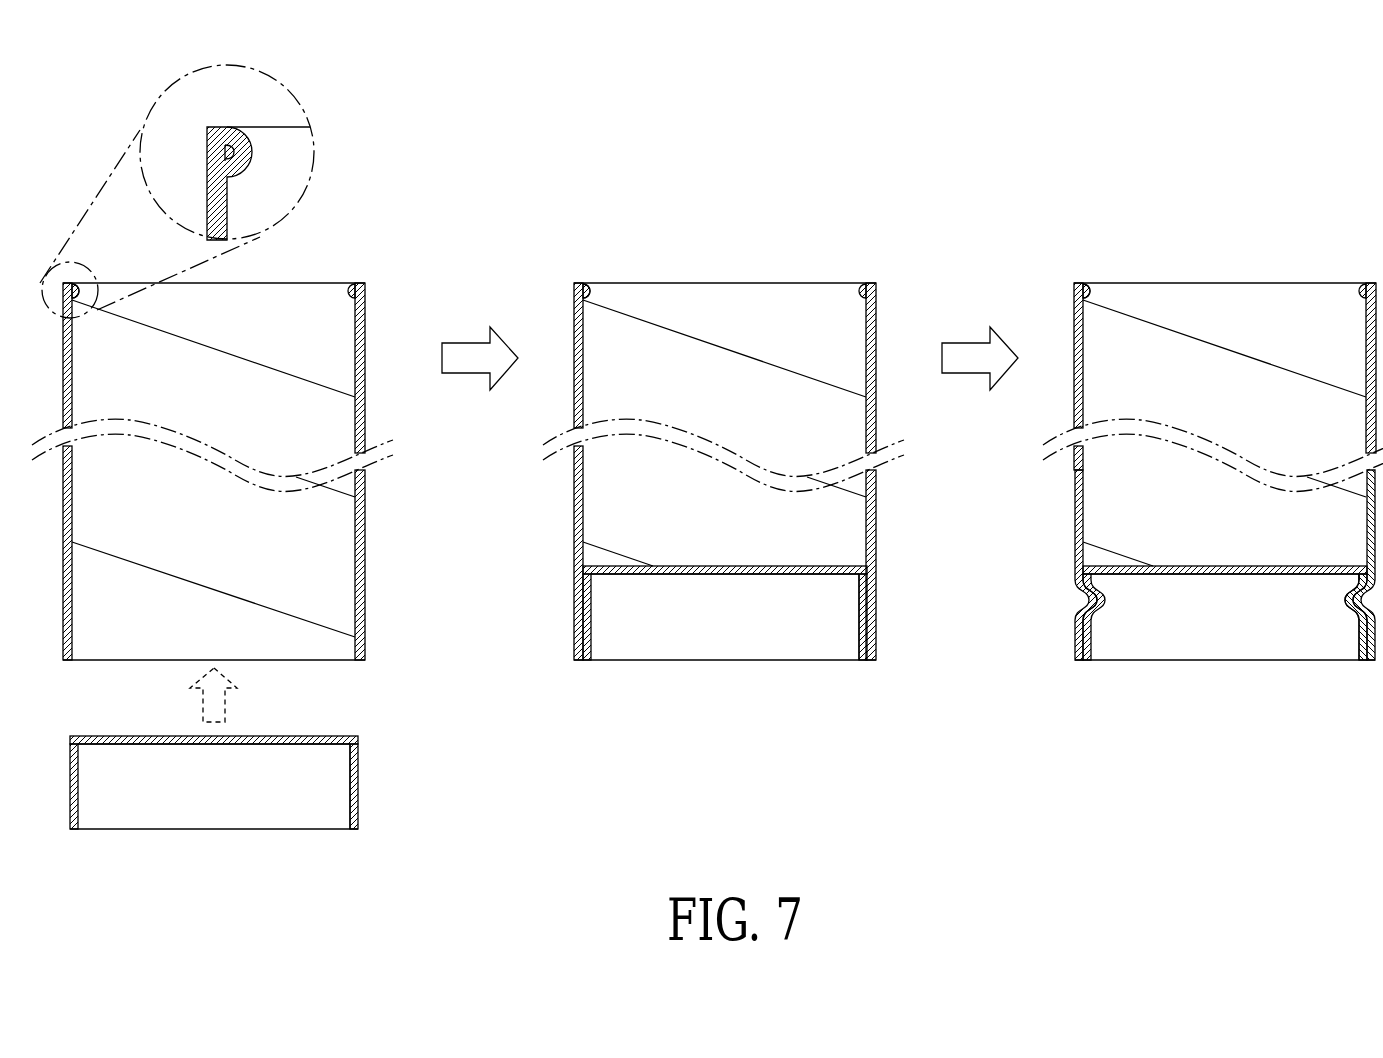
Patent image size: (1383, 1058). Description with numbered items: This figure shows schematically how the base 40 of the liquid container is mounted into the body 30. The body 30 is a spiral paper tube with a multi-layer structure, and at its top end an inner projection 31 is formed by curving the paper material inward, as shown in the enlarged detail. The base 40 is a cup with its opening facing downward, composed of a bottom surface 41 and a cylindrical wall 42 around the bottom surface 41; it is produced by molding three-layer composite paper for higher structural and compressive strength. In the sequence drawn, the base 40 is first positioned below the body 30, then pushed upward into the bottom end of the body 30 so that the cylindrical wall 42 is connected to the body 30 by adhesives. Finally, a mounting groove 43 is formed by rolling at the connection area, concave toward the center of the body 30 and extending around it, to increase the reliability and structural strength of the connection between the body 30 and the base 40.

The body 30 is at (363, 570).
The inner projection 31 is at (243, 150).
The base 40 is at (145, 825).
The bottom surface 41 is at (234, 743).
The cylindrical wall 42 is at (352, 808).
The mounting groove 43 is at (1082, 598).